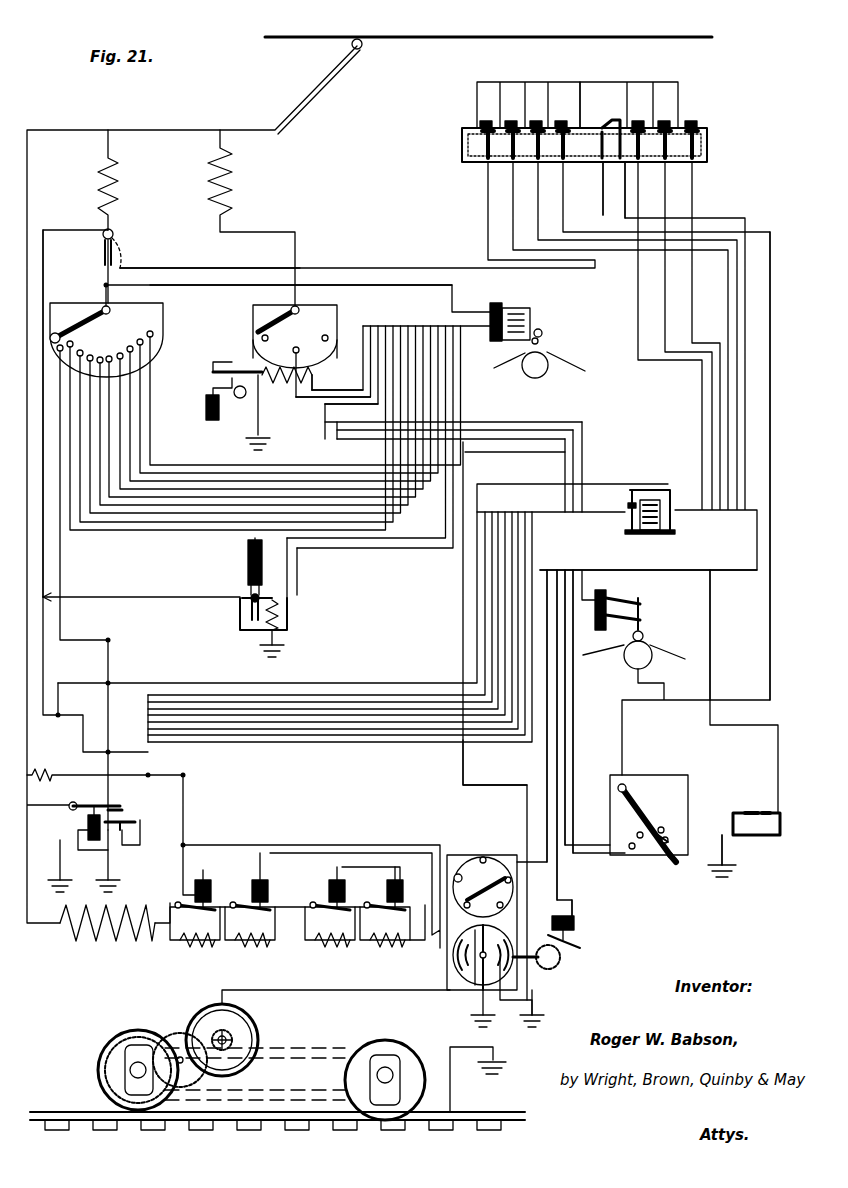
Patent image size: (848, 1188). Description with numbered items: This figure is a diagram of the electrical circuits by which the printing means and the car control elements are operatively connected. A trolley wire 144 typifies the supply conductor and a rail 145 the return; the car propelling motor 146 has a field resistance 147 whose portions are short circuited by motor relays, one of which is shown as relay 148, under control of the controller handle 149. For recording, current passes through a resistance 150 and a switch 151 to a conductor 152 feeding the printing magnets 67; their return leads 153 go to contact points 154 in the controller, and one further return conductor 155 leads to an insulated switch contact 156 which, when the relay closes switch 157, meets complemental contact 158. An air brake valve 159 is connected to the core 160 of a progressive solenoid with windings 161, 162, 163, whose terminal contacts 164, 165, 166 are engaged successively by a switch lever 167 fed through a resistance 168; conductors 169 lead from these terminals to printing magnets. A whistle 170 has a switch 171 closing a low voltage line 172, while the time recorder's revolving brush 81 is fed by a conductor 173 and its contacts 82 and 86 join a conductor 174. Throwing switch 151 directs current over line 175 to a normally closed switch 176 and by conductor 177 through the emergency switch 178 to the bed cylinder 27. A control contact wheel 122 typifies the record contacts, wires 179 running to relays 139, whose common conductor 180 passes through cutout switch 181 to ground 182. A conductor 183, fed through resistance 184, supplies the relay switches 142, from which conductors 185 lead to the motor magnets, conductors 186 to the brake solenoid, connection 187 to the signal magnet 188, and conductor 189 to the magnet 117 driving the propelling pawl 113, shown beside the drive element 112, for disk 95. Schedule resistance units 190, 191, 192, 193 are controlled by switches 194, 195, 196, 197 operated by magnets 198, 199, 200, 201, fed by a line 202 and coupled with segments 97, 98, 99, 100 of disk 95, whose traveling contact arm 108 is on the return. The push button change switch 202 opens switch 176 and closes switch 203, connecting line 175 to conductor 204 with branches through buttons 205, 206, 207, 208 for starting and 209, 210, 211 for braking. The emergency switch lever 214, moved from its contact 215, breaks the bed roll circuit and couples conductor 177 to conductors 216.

The trolley wire 144 is at (494, 36).
The resistance 150 is at (98, 185).
The switch 151 is at (100, 252).
The resistance 168 is at (240, 182).
The line 175 is at (236, 268).
The conductor 152 is at (230, 287).
The controller handle 149 is at (80, 315).
The contact points 154 is at (88, 354).
The return leads 153 is at (90, 455).
The switch lever 167 is at (270, 318).
The terminal contact 165 is at (298, 348).
The terminal contact 166 is at (330, 335).
The terminal contact 164 is at (262, 370).
The solenoid core 160 is at (222, 370).
The solenoid winding 161 is at (258, 395).
The solenoid winding 162 is at (296, 400).
The solenoid winding 163 is at (320, 415).
The air brake valve 159 is at (240, 400).
The conductors 169 is at (375, 378).
The conductor 174 is at (480, 428).
The conductors 186 is at (565, 435).
The connection 187 is at (518, 453).
The conductor 183 is at (632, 484).
The relay 139 is at (672, 505).
The relay switch 142 is at (628, 505).
The printing magnet 67 is at (535, 322).
The bed cylinder 27 is at (548, 362).
The normally closed switch 176 is at (604, 170).
The conductor 177 is at (770, 232).
The switch 203 is at (600, 132).
The push button switch 208 is at (483, 120).
The push button switch 207 is at (508, 120).
The push button switch 206 is at (536, 120).
The push button switch 205 is at (562, 120).
The conductor 204 is at (582, 100).
The push button change switch 202 is at (605, 125).
The air brake button 209 is at (640, 120).
The air brake button 210 is at (668, 120).
The air brake button 211 is at (694, 120).
The whistle 170 is at (248, 560).
The switch 171 is at (240, 600).
The solenoid or magnet 188 is at (285, 612).
The low voltage conducting line 172 is at (45, 549).
The return conductor 155 is at (62, 597).
The conductors 185 is at (336, 700).
The resistance 184 is at (45, 768).
The insulated switch contact 156 is at (105, 804).
The switch 157 is at (135, 816).
The complemental contact 158 is at (130, 840).
The motor relay 148 is at (60, 840).
The motor field resistance 147 is at (128, 948).
The magnet 198 is at (212, 885).
The magnet 199 is at (268, 888).
The magnet 200 is at (345, 886).
The magnet 201 is at (403, 890).
The normally open switch 194 is at (195, 921).
The normally open switch 195 is at (250, 921).
The normally closed switch 196 is at (330, 921).
The normally closed switch 197 is at (385, 921).
The resistance unit 190 is at (198, 948).
The resistance unit 191 is at (252, 948).
The resistance unit 192 is at (333, 948).
The resistance unit 193 is at (388, 948).
The revolving brush 81 is at (490, 868).
The contact 82 is at (484, 850).
The contact 86 is at (456, 872).
The disk 95 is at (470, 990).
The segment 99 is at (458, 965).
The segment 97 is at (461, 948).
The segment 98 is at (508, 940).
The segment 100 is at (502, 1000).
The gear 112 is at (552, 968).
The propelling pawl 113 is at (578, 946).
The magnet 117 is at (560, 915).
The traveling contact arm 108 is at (470, 985).
The car propelling motor 146 is at (258, 1028).
The rail 145 is at (58, 1110).
The wires 179 is at (608, 570).
The control contact wheel 122 is at (642, 640).
The common conductor 180 is at (712, 628).
The conductors 216 is at (570, 740).
The emergency switch 178 is at (680, 790).
The complemental contact 215 is at (672, 838).
The switch lever 214 is at (676, 870).
The cutout switch 181 is at (765, 836).
The ground 182 is at (732, 880).
The conductor 189 is at (550, 745).
The conductor 173 is at (425, 755).